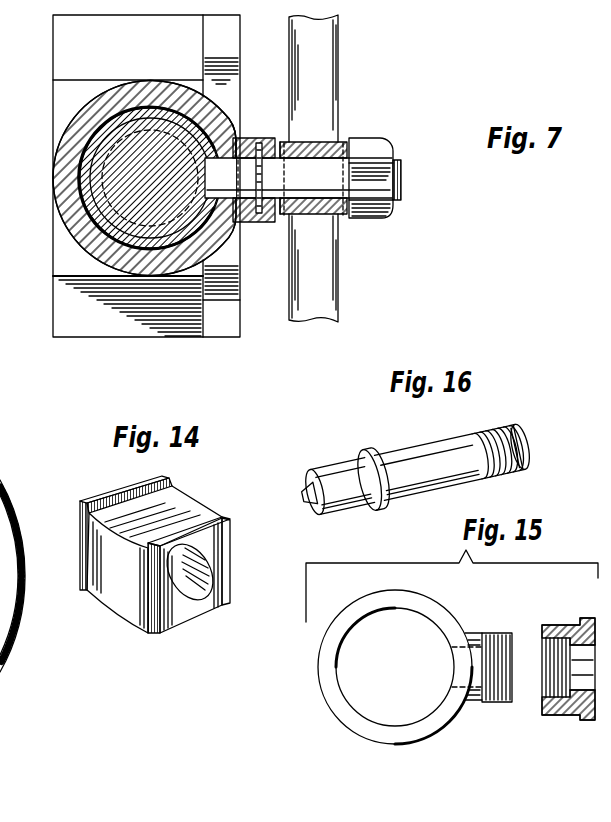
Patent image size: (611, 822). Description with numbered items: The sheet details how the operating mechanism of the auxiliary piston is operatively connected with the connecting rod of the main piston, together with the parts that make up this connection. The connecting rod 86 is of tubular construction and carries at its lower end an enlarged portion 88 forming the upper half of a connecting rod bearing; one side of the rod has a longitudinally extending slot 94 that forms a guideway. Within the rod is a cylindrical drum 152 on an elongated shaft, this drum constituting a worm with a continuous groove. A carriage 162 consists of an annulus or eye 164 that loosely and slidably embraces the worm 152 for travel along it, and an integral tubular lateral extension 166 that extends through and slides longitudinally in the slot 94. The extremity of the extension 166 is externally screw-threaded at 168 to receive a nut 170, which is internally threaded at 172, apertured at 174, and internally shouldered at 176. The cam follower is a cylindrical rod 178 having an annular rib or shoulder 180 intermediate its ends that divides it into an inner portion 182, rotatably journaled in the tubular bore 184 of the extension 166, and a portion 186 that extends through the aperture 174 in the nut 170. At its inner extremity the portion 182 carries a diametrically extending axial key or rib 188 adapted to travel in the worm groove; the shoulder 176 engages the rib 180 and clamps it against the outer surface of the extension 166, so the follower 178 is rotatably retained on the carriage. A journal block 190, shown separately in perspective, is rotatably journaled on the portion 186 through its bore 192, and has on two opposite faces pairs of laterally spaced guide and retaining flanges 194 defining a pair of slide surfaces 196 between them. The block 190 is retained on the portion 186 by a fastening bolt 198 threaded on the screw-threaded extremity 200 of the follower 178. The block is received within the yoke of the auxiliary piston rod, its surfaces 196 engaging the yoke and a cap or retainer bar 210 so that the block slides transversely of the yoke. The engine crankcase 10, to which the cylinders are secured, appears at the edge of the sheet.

In FIG. 14, the crankcase 10 is at (6, 487).
In FIG. 7, the connecting rod 86 is at (78, 93).
In FIG. 7, the enlarged portion 88 is at (70, 289).
In FIG. 7, the slot 94 is at (233, 137).
In FIG. 7, the cylindrical drum 152 is at (143, 145).
In FIG. 15, the carriage 162 is at (471, 622).
In FIG. 7, the annulus or eye 164 is at (107, 120).
In FIG. 15, the annulus or eye 164 is at (342, 710).
In FIG. 15, the tubular lateral extension 166 is at (477, 694).
In FIG. 15, the external screw threads 168 is at (500, 636).
In FIG. 7, the nut 170 is at (248, 138).
In FIG. 15, the nut 170 is at (570, 708).
In FIG. 15, the internal threads 172 is at (550, 687).
In FIG. 15, the aperture 174 is at (587, 656).
In FIG. 15, the internal shoulder 176 is at (562, 642).
In FIG. 16, the follower rod 178 is at (405, 465).
In FIG. 7, the annular rib or shoulder 180 is at (263, 176).
In FIG. 16, the annular rib or shoulder 180 is at (385, 506).
In FIG. 7, the inner portion 182 is at (216, 177).
In FIG. 16, the inner portion 182 is at (337, 480).
In FIG. 15, the tubular bore 184 is at (465, 648).
In FIG. 7, the outer portion 186 is at (325, 185).
In FIG. 16, the outer portion 186 is at (443, 450).
In FIG. 16, the axial key or rib 188 is at (305, 500).
In FIG. 7, the journal block 190 is at (314, 142).
In FIG. 14, the journal block 190 is at (178, 612).
In FIG. 14, the bore 192 is at (190, 584).
In FIG. 7, the guide and retaining flanges 194 is at (347, 142).
In FIG. 14, the guide and retaining flanges 194 is at (102, 498).
In FIG. 14, the guide or slide surfaces 196 is at (122, 526).
In FIG. 7, the fastening bolt 198 is at (373, 153).
In FIG. 7, the screw-threaded extremity 200 is at (403, 186).
In FIG. 16, the screw-threaded extremity 200 is at (513, 442).
In FIG. 7, the cap or retainer bar 210 is at (322, 268).